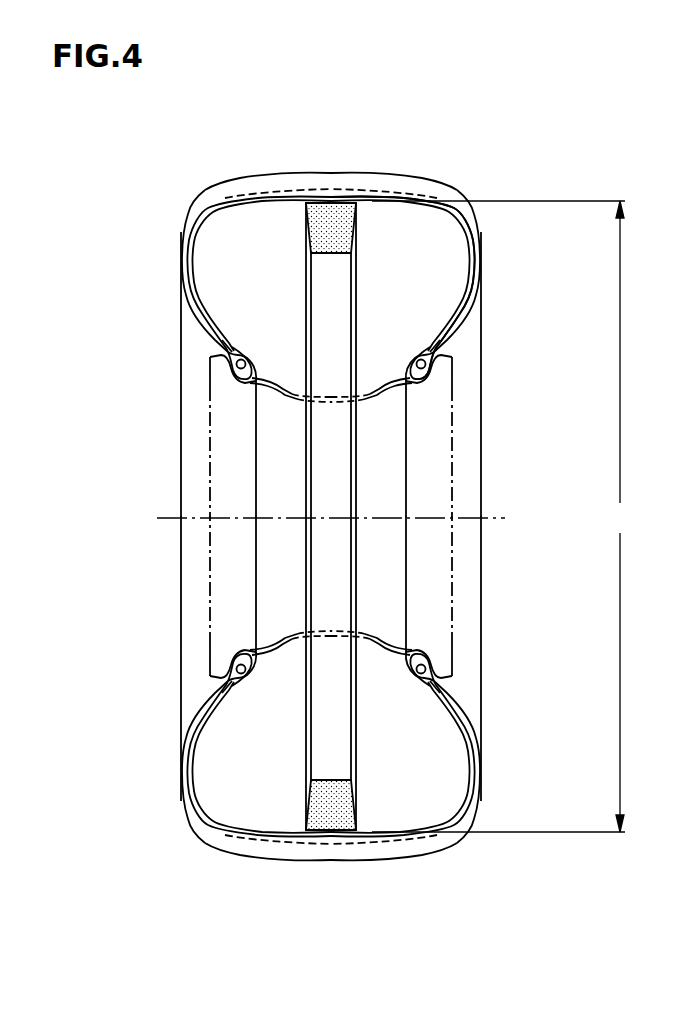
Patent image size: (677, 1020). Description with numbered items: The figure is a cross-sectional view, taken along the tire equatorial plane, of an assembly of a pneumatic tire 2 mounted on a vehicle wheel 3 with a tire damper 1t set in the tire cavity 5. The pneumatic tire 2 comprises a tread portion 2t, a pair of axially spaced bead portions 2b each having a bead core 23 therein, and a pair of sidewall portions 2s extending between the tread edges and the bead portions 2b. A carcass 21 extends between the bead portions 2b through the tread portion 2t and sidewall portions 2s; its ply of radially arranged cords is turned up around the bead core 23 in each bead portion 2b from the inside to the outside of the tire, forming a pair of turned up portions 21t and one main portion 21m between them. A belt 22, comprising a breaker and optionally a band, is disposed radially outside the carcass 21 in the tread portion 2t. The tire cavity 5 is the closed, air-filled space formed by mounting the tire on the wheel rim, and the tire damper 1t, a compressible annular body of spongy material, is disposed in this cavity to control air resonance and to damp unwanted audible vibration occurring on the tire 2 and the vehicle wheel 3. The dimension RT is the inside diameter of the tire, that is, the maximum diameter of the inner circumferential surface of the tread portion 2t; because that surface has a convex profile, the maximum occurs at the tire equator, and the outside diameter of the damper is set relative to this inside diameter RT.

The pneumatic tire 2 is at (468, 121).
The tread portion 2t is at (235, 178).
The sidewall portion 2s is at (181, 235).
The bead portion 2b is at (205, 337).
The carcass 21 is at (190, 216).
The main portion 21m is at (465, 318).
The turned up portion 21t is at (440, 343).
The belt 22 is at (277, 190).
The bead core 23 is at (225, 347).
The tire cavity 5 is at (273, 307).
The vehicle wheel 3 is at (203, 495).
The tire damper 1t is at (327, 213).
The inside diameter RT is at (503, 516).